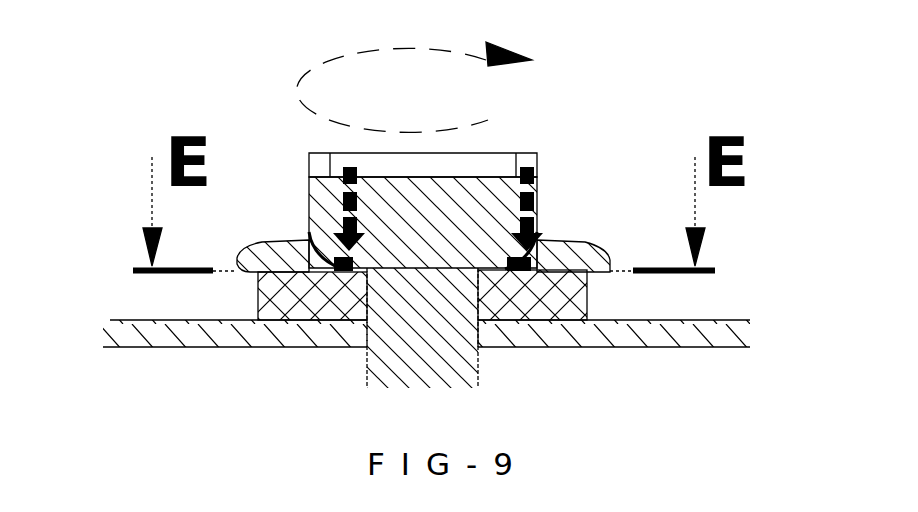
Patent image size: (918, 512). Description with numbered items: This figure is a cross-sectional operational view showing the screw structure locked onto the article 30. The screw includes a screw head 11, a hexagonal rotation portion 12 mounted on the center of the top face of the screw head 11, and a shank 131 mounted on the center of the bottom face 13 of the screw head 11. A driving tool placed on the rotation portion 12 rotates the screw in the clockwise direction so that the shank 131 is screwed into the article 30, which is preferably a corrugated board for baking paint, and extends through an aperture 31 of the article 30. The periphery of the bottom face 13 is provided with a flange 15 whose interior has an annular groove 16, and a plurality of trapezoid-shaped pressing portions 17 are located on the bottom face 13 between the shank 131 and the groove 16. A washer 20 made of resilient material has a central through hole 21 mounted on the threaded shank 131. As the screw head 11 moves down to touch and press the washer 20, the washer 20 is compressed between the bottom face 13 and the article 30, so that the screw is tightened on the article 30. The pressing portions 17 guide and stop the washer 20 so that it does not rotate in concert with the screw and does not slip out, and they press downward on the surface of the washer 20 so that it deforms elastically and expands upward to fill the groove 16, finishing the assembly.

The screw head 11 is at (507, 153).
The rotation portion 12 is at (307, 177).
The bottom face 13 is at (300, 245).
The flange 15 is at (240, 252).
The groove 16 is at (257, 284).
The pressing portions 17 is at (542, 245).
The washer 20 is at (573, 302).
The through hole 21 is at (495, 308).
The article 30 is at (163, 333).
The aperture 31 is at (353, 328).
The shank 131 is at (423, 268).